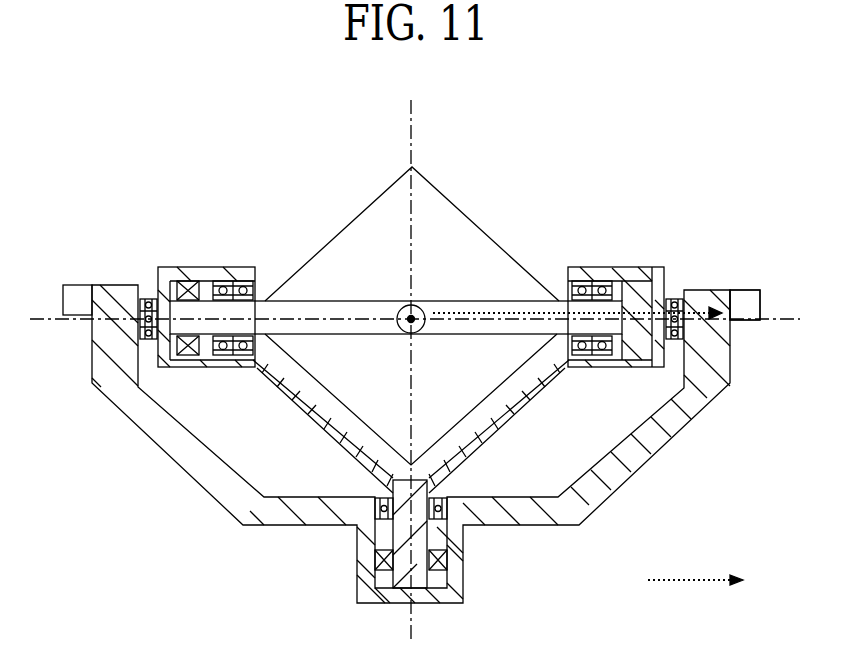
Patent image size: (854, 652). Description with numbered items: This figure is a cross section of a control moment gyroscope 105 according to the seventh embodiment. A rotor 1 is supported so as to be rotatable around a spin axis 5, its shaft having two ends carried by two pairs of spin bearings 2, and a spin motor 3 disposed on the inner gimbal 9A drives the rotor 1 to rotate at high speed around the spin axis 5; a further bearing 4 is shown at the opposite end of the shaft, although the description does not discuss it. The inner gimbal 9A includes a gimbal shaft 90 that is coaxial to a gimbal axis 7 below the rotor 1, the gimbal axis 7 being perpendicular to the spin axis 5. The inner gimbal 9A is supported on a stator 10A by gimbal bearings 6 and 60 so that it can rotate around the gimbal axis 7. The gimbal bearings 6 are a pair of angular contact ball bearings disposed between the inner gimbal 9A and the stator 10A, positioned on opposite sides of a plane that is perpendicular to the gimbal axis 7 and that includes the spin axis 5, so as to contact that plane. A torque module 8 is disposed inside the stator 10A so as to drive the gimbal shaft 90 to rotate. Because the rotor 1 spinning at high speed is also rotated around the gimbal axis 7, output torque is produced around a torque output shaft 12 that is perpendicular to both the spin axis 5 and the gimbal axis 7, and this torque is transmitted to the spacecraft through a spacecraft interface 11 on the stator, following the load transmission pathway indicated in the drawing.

The control moment gyroscope 105 is at (153, 90).
The gimbal axis 7 is at (412, 132).
The spin axis 5 is at (785, 319).
The rotor 1 is at (480, 223).
The torque output shaft 12 is at (398, 312).
The spin bearings 2 is at (242, 281).
The spin motor 3 is at (189, 283).
The ball bearing 4 is at (596, 281).
The gimbal bearings 6 is at (148, 298).
The inner gimbal 9A is at (163, 367).
The stator 10A is at (698, 303).
The spacecraft interface 11 is at (742, 306).
The gimbal bearing 60 is at (358, 522).
The gimbal shaft 90 is at (413, 541).
The torque module 8 is at (448, 561).